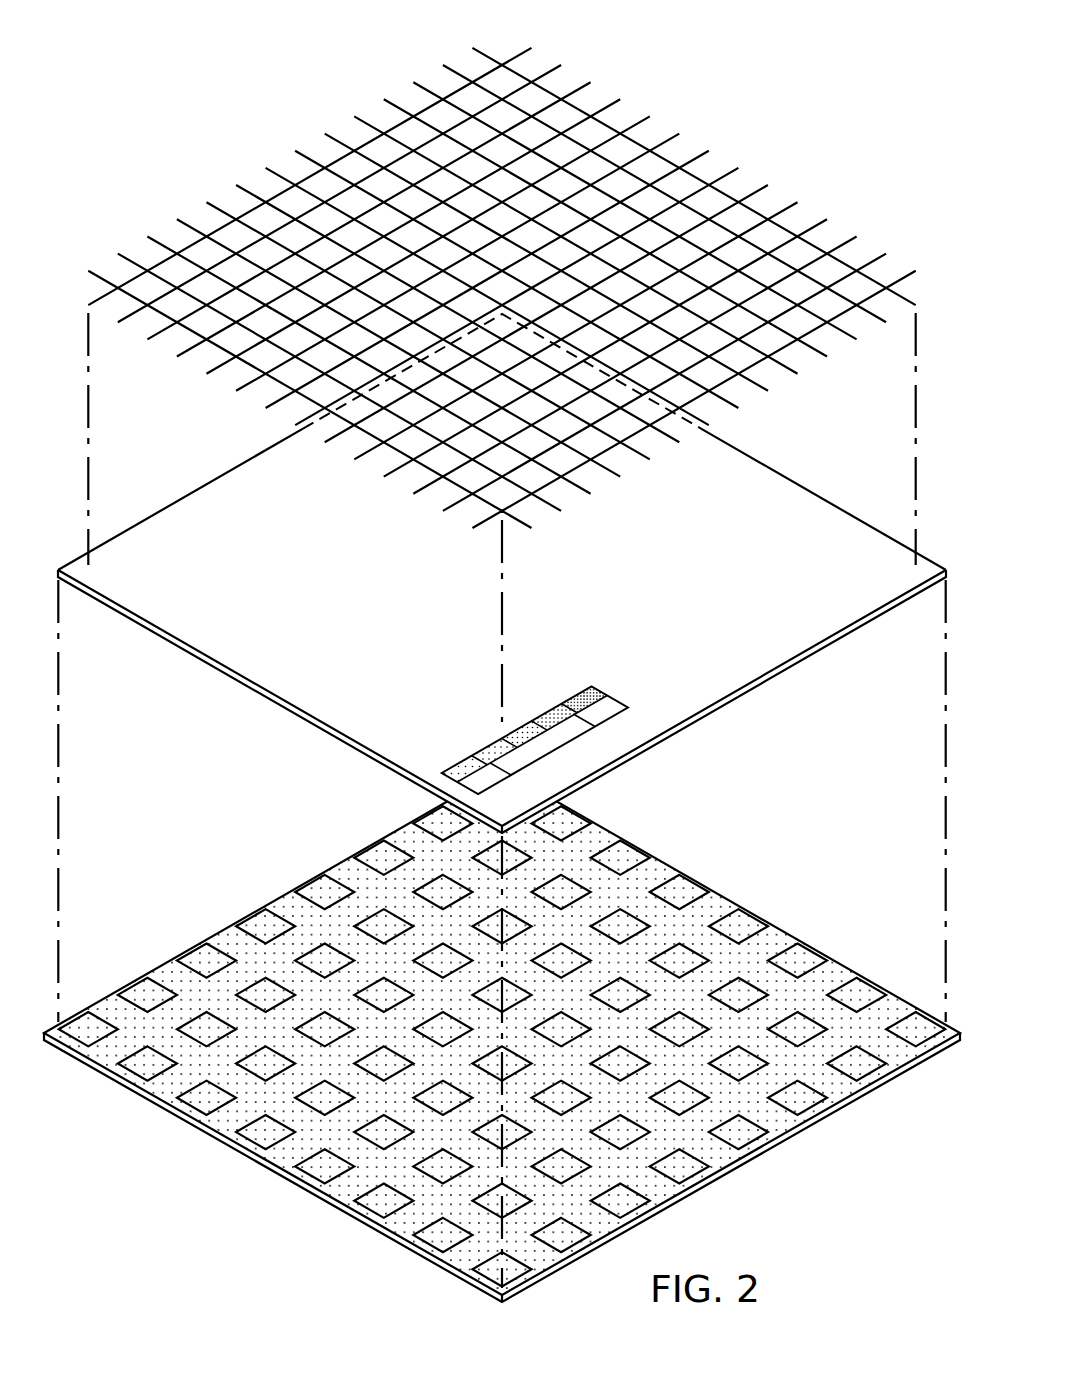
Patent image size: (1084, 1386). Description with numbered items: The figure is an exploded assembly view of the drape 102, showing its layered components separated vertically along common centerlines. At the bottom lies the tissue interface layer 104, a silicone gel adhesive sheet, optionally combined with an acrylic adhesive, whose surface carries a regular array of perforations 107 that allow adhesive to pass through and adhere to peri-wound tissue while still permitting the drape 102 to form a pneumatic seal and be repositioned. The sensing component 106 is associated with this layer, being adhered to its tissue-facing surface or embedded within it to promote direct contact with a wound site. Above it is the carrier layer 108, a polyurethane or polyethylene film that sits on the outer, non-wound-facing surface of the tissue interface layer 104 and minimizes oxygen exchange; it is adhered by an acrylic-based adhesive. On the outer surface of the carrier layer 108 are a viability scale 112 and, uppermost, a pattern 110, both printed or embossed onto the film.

The drape 102 is at (502, 651).
The tissue interface layer 104 is at (502, 1036).
The sensing component 106 is at (786, 1140).
The perforations 107 is at (747, 930).
The carrier layer 108 is at (210, 498).
The pattern 110 is at (307, 180).
The viability scale 112 is at (617, 702).